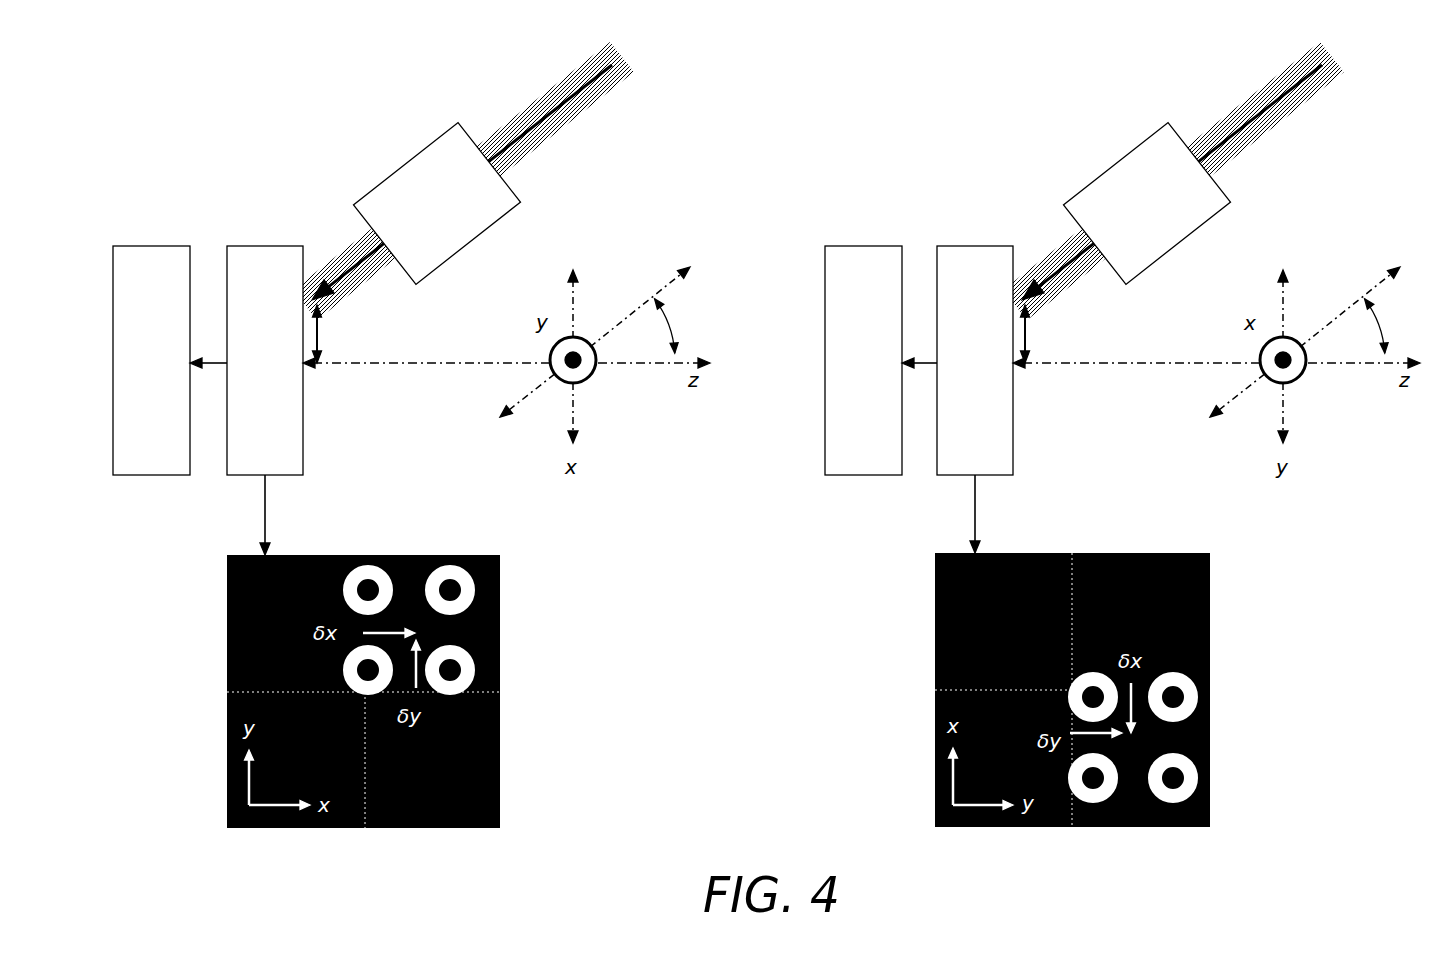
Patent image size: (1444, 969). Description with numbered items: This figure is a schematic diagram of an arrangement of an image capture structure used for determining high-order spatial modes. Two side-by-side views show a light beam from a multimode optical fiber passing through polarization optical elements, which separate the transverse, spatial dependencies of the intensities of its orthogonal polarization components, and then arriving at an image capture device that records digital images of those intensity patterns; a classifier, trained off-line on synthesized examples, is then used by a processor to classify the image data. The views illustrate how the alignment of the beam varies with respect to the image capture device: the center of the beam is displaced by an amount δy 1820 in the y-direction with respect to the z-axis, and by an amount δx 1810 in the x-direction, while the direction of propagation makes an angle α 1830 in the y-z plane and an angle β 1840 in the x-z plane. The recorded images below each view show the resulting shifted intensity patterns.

The δx 1810 is at (1070, 355).
The δy 1820 is at (361, 354).
The α 1830 is at (635, 315).
The β 1840 is at (1345, 315).